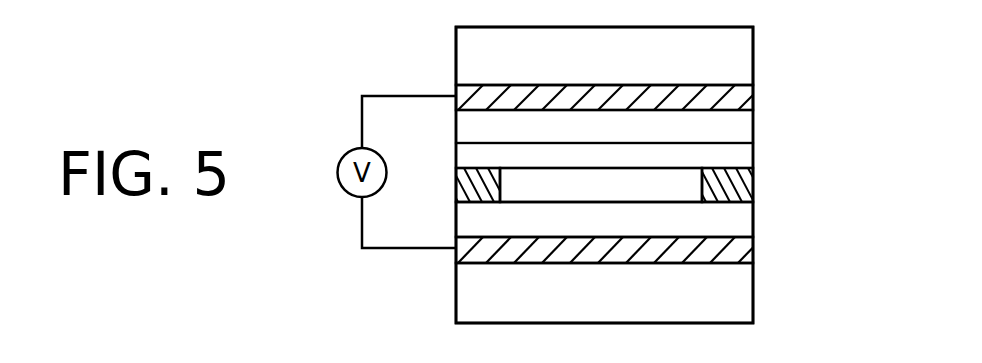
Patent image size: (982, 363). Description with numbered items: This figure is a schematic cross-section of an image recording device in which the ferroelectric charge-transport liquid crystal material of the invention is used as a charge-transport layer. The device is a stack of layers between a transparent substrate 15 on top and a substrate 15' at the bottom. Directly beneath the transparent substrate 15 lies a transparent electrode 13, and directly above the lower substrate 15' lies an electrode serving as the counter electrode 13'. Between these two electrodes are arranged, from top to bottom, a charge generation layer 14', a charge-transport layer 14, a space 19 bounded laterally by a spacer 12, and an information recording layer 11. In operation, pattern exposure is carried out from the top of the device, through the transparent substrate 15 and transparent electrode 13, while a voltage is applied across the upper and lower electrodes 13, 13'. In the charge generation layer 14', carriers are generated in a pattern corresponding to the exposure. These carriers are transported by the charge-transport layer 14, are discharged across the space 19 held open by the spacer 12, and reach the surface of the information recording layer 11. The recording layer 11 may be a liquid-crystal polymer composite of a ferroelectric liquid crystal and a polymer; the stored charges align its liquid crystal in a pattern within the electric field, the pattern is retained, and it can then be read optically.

The transparent substrate 15 is at (647, 56).
The transparent electrode 13 is at (647, 92).
The charge generation layer 14' is at (650, 123).
The charge-transport layer 14 is at (647, 152).
The spacer 12 is at (745, 188).
The space 19 is at (586, 198).
The information recording layer 11 is at (745, 223).
The counter electrode 13' is at (650, 253).
The substrate 15' is at (650, 293).